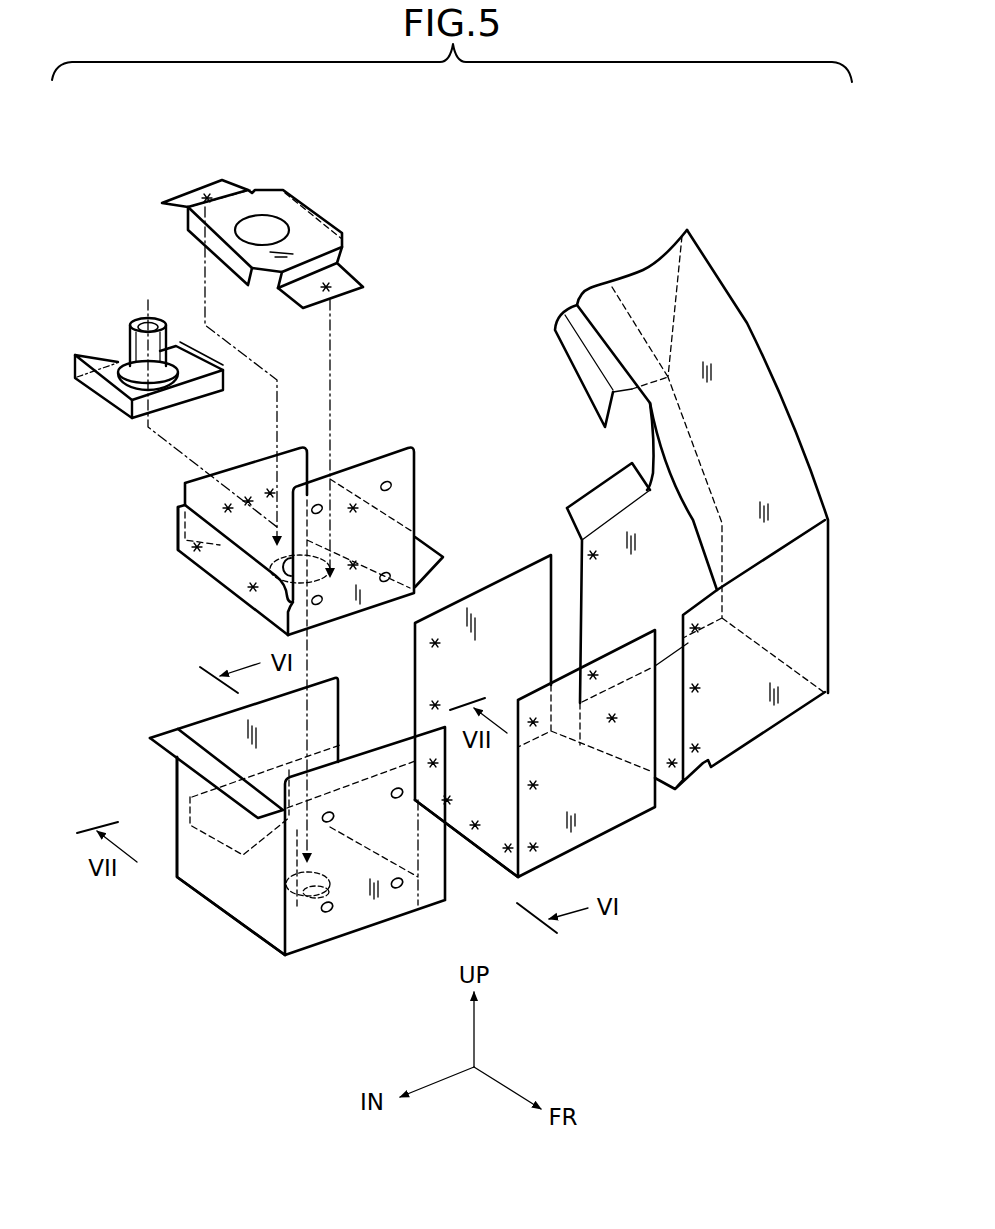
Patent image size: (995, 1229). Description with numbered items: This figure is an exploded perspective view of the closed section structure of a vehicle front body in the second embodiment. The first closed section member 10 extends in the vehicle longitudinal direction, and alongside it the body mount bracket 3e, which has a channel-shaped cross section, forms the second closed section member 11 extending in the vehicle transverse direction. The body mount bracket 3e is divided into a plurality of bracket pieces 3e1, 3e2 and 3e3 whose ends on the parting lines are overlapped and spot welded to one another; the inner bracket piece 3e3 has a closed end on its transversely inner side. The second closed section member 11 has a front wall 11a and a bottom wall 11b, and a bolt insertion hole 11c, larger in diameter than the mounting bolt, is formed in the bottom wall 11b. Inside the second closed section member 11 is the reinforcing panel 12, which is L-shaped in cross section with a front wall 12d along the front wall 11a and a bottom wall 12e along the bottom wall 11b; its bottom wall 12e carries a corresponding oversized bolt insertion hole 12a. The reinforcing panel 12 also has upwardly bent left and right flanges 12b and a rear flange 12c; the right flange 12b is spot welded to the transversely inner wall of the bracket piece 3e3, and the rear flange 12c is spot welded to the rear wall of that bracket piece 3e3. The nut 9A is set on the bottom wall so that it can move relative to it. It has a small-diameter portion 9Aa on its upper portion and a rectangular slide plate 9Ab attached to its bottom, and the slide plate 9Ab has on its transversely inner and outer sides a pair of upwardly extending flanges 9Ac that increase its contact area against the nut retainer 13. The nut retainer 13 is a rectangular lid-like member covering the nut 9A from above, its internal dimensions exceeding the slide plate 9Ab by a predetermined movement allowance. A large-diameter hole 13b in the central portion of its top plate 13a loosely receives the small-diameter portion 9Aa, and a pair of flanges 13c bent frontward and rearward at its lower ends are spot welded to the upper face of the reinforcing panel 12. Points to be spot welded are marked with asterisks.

The body mount bracket 3e is at (620, 691).
The bracket piece 3e1 is at (740, 718).
The bracket piece 3e2 is at (592, 800).
The inner bracket piece 3e3 is at (432, 868).
The nut 9A is at (166, 378).
The small-diameter portion 9Aa is at (133, 352).
The slide plate 9Ab is at (146, 413).
The flange 9Ac is at (100, 388).
The first closed section member 10 is at (748, 322).
The second closed section member 11 is at (401, 736).
The front wall 11a is at (368, 767).
The bottom wall 11b is at (242, 930).
The bolt insertion hole 11c is at (327, 915).
The reinforcing panel 12 is at (293, 677).
The bolt insertion hole 12a is at (271, 575).
The left and right flanges 12b is at (217, 573).
The rear flange 12c is at (262, 492).
The front wall 12d is at (372, 477).
The bottom wall 12e is at (178, 534).
The nut retainer 13 is at (285, 335).
The top plate 13a is at (222, 222).
The large-diameter hole 13b is at (266, 230).
The flanges 13c is at (200, 195).